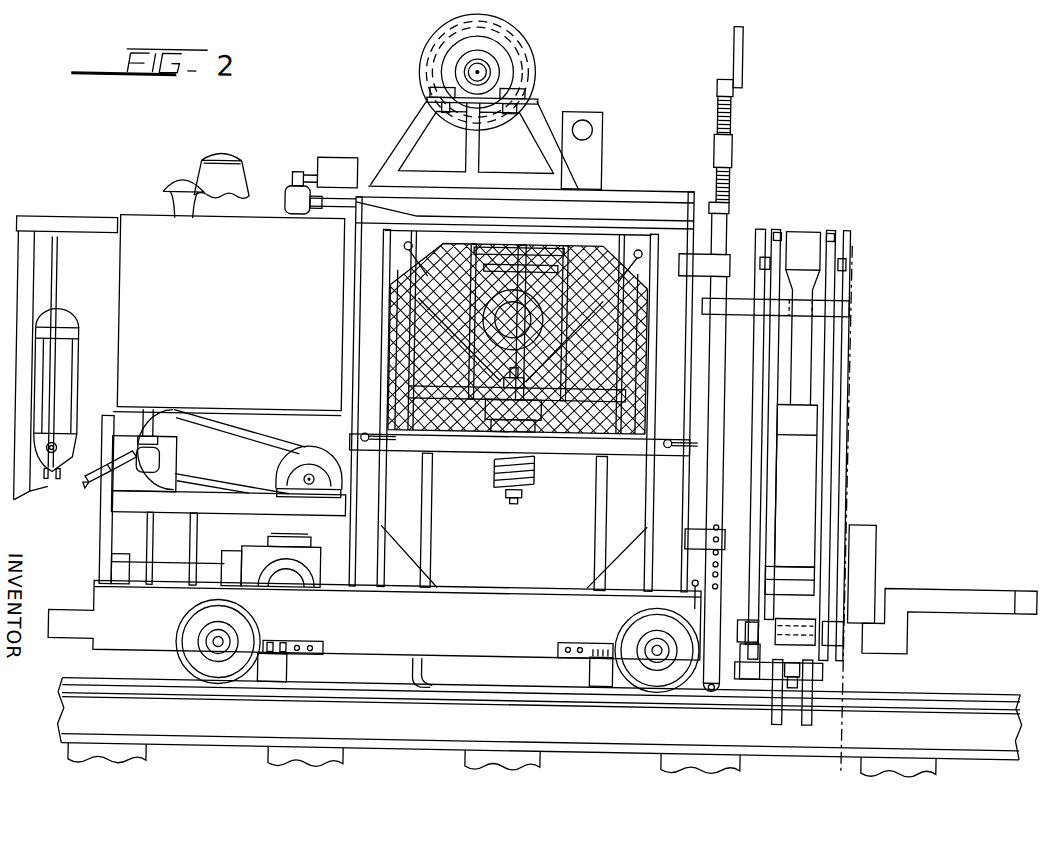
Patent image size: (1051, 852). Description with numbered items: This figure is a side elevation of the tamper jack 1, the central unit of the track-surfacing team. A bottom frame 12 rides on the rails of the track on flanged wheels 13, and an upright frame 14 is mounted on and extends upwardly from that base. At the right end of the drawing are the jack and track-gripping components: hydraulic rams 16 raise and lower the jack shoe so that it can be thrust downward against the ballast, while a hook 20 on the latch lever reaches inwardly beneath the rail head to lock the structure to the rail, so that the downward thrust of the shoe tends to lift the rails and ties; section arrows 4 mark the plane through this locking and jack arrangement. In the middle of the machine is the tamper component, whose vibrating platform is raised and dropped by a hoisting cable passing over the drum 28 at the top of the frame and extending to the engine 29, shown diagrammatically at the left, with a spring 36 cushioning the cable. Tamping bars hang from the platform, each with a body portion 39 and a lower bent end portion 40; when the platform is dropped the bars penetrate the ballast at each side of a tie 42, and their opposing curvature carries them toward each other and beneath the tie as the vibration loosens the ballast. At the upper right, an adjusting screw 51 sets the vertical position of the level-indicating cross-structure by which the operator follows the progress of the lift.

The rail 1 is at (986, 712).
The bottom frame 12 is at (457, 641).
The flanged wheels 13 is at (199, 641).
The frame 14 is at (687, 546).
The hydraulic rams 16 is at (800, 462).
The hook 20 is at (810, 707).
The drum 28 is at (529, 63).
The engine 29 is at (243, 337).
The spring 36 is at (538, 469).
The body portion 39 is at (430, 510).
The lower offset or bent end portion 40 is at (431, 680).
The tie 42 is at (468, 757).
The adjusting screw 51 is at (724, 111).
The section line 4- 4 is at (849, 240).